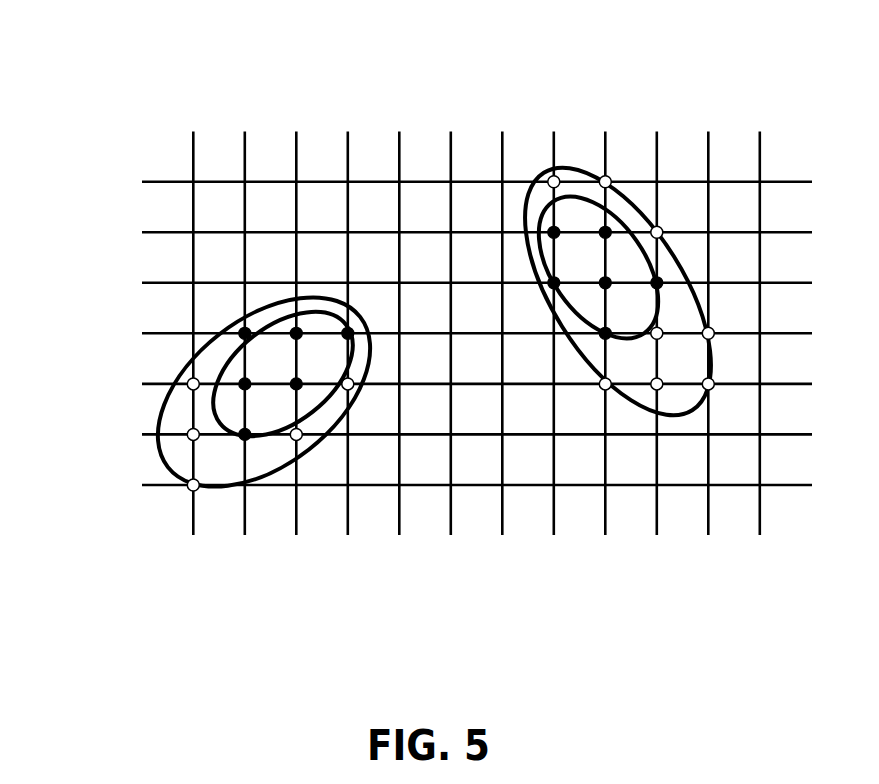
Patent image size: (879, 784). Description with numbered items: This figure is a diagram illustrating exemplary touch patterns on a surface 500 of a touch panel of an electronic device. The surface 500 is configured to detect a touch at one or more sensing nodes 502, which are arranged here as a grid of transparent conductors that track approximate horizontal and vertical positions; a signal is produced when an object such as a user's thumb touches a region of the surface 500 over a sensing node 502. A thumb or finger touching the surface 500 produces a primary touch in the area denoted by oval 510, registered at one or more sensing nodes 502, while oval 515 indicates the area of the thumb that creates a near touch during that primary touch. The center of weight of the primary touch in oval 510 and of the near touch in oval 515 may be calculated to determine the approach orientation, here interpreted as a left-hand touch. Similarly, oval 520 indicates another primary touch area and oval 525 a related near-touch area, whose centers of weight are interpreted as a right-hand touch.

The surface 500 is at (183, 52).
The sensing nodes 502 is at (442, 175).
The oval 510 is at (205, 368).
The oval 515 is at (167, 465).
The oval 520 is at (540, 212).
The oval 525 is at (585, 173).